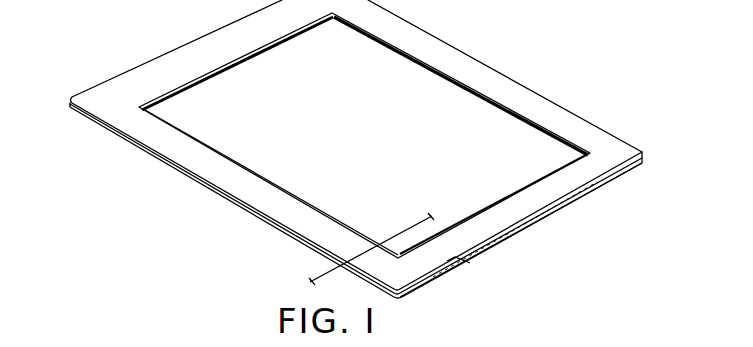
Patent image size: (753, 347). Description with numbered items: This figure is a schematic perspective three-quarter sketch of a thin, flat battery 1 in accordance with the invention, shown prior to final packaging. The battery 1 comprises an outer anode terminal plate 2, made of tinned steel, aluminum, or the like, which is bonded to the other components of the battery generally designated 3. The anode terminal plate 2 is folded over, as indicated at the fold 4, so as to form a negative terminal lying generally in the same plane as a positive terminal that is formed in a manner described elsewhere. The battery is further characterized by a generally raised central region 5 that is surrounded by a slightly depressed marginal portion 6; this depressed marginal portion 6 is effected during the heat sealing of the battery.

The thin, flat battery 1 is at (130, 45).
The outer anode terminal plate 2 is at (199, 50).
The other components of the battery 3 is at (546, 228).
The fold 4 is at (418, 213).
The raised central region 5 is at (446, 105).
The depressed marginal portion 6 is at (196, 162).